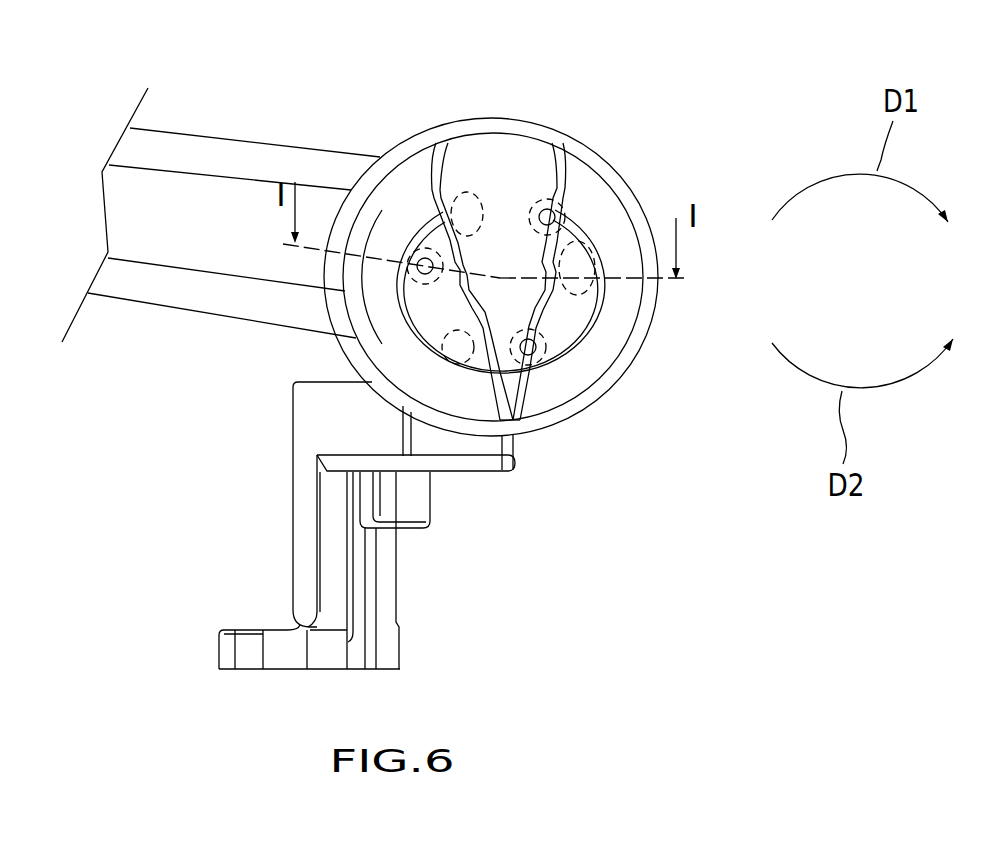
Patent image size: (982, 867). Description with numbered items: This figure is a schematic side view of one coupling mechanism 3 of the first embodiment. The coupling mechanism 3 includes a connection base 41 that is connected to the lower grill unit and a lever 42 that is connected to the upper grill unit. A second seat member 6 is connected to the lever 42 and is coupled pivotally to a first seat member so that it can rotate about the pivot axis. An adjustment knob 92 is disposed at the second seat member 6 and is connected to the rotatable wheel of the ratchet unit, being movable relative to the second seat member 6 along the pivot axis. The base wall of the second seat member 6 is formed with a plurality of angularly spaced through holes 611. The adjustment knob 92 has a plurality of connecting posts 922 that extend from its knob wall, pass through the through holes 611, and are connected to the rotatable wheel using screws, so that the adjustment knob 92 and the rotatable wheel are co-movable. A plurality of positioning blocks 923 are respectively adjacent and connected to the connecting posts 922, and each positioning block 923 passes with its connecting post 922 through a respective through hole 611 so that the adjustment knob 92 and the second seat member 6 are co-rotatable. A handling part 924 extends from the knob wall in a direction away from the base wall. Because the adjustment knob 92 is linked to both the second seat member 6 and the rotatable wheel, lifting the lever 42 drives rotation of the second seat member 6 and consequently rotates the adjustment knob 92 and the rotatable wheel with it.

The coupling mechanism 3 is at (570, 108).
The second seat member 6 is at (588, 400).
The connection base 41 is at (377, 594).
The lever 42 is at (207, 190).
The adjustment knob 92 is at (547, 397).
The connecting posts 922 is at (561, 218).
The positioning blocks 923 is at (424, 248).
The handling part 924 is at (500, 193).
The through holes 611 is at (463, 195).